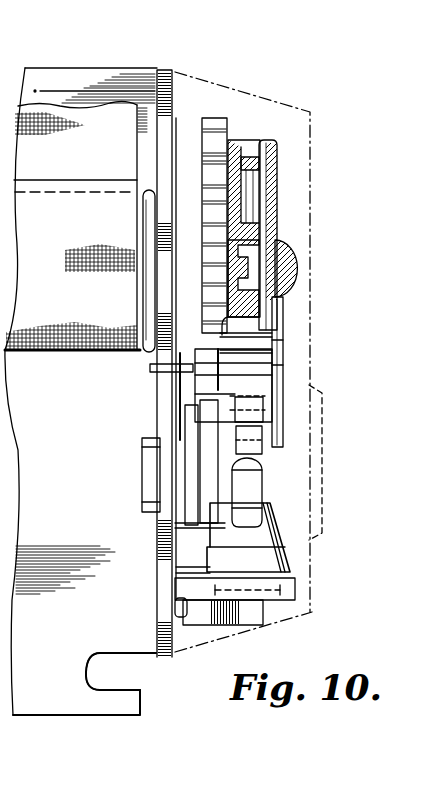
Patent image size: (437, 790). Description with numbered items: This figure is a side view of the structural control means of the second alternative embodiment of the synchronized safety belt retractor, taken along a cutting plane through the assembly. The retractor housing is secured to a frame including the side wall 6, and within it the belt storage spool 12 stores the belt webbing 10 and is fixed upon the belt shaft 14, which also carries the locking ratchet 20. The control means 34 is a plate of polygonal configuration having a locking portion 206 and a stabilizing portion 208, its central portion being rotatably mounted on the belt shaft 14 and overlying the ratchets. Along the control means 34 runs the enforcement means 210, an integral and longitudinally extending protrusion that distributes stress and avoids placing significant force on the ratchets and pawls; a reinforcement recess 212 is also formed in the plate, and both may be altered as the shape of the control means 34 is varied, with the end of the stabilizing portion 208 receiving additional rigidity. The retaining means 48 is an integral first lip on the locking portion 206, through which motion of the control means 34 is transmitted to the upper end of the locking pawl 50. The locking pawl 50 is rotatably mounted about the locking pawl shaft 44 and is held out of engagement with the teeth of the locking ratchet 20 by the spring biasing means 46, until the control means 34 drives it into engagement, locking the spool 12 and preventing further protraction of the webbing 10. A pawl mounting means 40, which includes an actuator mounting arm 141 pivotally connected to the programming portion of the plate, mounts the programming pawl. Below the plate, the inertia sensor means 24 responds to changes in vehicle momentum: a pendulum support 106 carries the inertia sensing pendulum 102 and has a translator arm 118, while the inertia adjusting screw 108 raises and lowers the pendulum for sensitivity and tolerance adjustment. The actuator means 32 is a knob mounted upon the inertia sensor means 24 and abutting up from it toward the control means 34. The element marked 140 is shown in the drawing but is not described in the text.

The side wall 6 is at (63, 663).
The belt webbing 10 is at (48, 112).
The belt storage spool 12 is at (141, 221).
The belt shaft 14 is at (292, 245).
The locking ratchet 20 is at (212, 122).
The inertia sensor means 24 is at (306, 558).
The actuator means 32 is at (220, 459).
The control means 34 is at (292, 300).
The pawl mounting means 40 is at (275, 475).
The locking pawl shaft 44 is at (142, 492).
The spring biasing means 46 is at (182, 506).
The retaining means 48 is at (204, 390).
The locking pawl 50 is at (190, 368).
The inertia sensing pendulum 102 is at (222, 557).
The pendulum support 106 is at (293, 598).
The inertia adjusting screw 108 is at (185, 614).
The translator arm 118 is at (252, 485).
The housing 140 is at (284, 427).
The actuator mounting arm 141 is at (285, 456).
The locking portion 206 is at (284, 356).
The stabilizing portion 208 is at (278, 198).
The enforcement means 210 is at (284, 319).
The reinforcement recess 212 is at (266, 150).